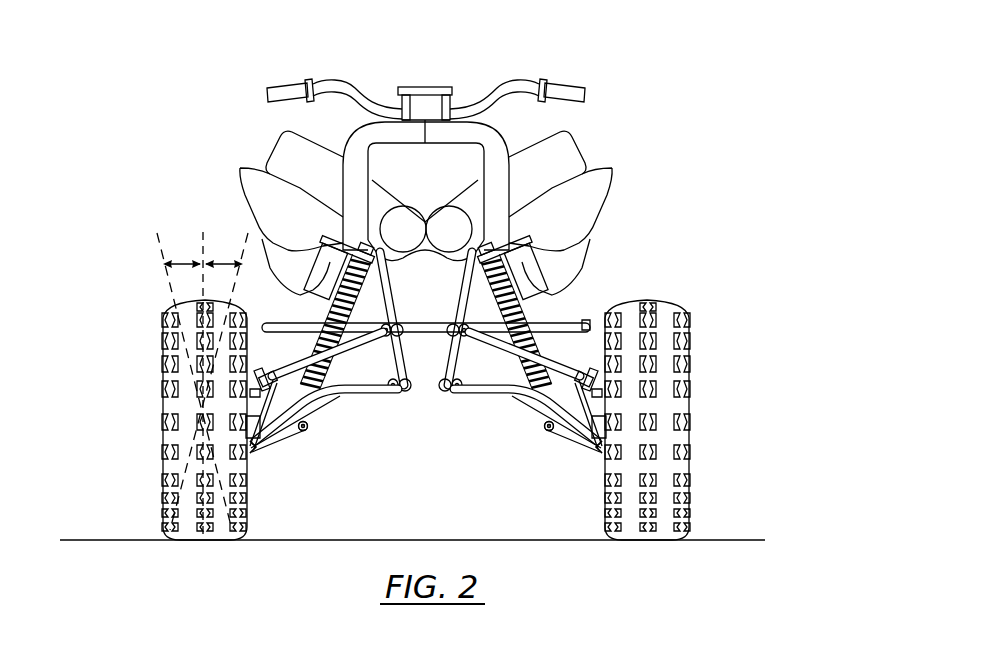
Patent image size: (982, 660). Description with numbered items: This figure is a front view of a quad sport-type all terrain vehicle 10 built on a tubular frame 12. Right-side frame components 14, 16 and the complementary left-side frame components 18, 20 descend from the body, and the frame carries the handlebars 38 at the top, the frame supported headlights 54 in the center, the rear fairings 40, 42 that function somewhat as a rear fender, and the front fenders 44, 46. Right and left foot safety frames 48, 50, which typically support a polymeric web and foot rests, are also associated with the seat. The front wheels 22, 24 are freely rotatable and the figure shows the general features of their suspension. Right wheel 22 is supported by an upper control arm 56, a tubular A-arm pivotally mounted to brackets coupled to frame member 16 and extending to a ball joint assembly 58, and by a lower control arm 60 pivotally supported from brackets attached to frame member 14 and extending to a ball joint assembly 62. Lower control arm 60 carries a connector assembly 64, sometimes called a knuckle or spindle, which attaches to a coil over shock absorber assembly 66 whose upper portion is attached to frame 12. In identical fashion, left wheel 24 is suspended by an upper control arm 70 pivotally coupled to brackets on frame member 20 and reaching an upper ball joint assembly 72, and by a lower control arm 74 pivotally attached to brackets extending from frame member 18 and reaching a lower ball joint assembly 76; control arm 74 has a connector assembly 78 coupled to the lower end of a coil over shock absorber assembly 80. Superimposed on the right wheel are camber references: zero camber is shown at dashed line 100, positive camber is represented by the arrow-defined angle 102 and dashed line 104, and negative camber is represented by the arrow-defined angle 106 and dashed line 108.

The all terrain vehicle 10 is at (412, 291).
The tubular frame 12 is at (438, 371).
The frame component 14 is at (405, 392).
The frame component 16 is at (400, 328).
The frame component 18 is at (447, 396).
The frame component 20 is at (452, 322).
The right forward wheel 22 is at (161, 424).
The left forward wheel 24 is at (689, 423).
The handlebars 38 is at (486, 87).
The rear fairing 40 is at (283, 146).
The rear fairing 42 is at (575, 144).
The front fender 44 is at (238, 176).
The front fender 46 is at (613, 187).
The right foot safety frame 48 is at (278, 323).
The left foot safety frame 50 is at (586, 322).
The headlights 54 is at (460, 225).
The upper control arm 56 is at (299, 359).
The ball joint assembly 58 is at (285, 435).
The lower control arm 60 is at (346, 393).
The ball joint assembly 62 is at (253, 454).
The connector assembly 64 is at (310, 427).
The coil over shock absorber assembly 66 is at (336, 313).
The upper control arm 70 is at (547, 358).
The upper ball joint assembly 72 is at (597, 370).
The lower control arm 74 is at (508, 397).
The lower ball joint assembly 76 is at (600, 458).
The connector assembly 78 is at (547, 432).
The coil over shock absorber assembly 80 is at (509, 293).
The dashed line 100 is at (200, 256).
The arrow-defined angle 102 is at (168, 272).
The dashed line 104 is at (158, 250).
The arrow-defined angle 106 is at (228, 259).
The dashed line 108 is at (247, 253).